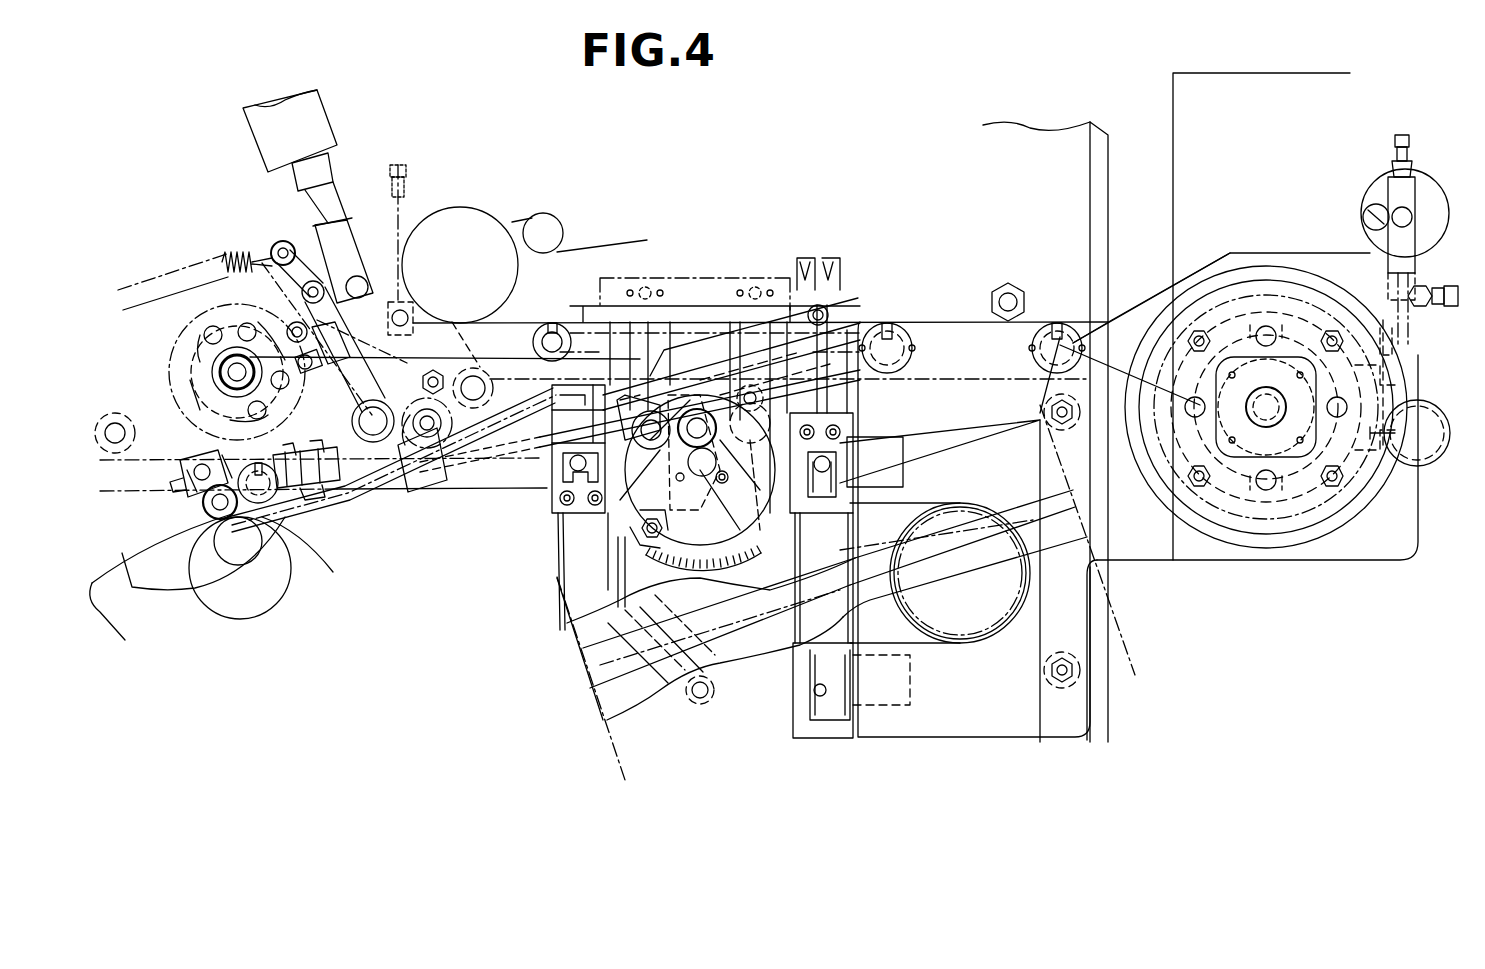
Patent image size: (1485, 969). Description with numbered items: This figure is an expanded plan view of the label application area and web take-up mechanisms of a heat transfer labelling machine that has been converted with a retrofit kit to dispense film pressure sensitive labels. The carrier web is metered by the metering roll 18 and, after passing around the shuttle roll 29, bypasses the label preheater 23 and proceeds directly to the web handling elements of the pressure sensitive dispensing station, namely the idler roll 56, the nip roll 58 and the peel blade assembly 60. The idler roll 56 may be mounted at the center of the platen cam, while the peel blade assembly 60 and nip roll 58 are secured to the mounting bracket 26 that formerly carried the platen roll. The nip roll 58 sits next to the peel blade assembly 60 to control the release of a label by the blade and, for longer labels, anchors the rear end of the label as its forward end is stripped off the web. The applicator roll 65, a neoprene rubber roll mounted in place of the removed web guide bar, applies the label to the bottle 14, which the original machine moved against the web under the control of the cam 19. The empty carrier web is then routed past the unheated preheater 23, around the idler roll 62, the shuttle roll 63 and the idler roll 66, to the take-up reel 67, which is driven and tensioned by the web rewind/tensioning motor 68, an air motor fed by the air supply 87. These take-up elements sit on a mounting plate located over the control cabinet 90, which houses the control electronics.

The bottle 14 is at (165, 578).
The metering roll 18 is at (498, 270).
The cam 19 is at (588, 233).
The label preheater 23 is at (470, 453).
The mounting bracket 26 is at (418, 445).
The shuttle roll 29 is at (565, 325).
The idler roll 56 is at (180, 373).
The nip roll 58 is at (292, 530).
The peel blade assembly 60 is at (290, 497).
The idler roll 62 is at (903, 330).
The shuttle roll 63 is at (603, 507).
The applicator roll 65 is at (185, 517).
The idler roll 66 is at (1060, 323).
The take-up reel 67 is at (1255, 462).
The web rewind/tensioning motor 68 is at (1243, 320).
The air supply 87 is at (1413, 323).
The control cabinet 90 is at (620, 757).